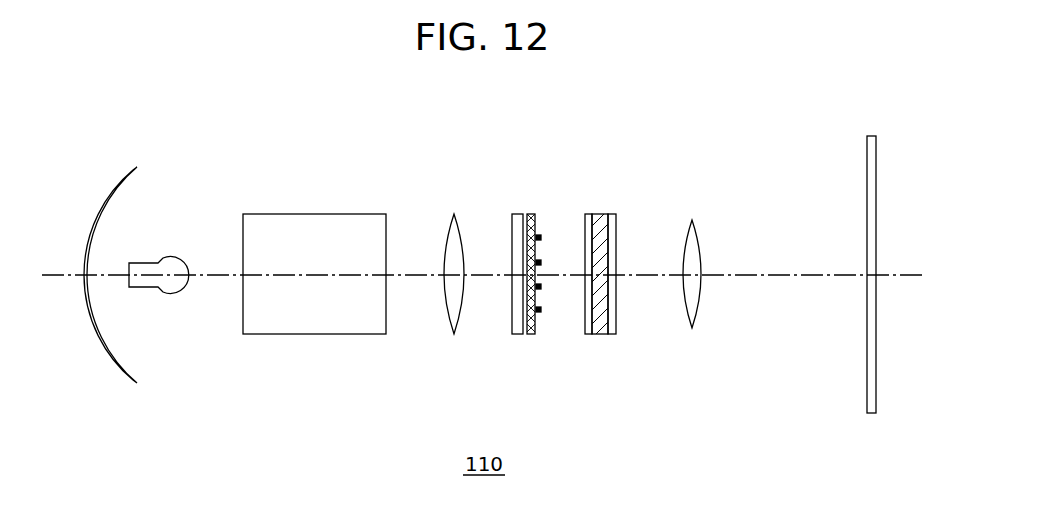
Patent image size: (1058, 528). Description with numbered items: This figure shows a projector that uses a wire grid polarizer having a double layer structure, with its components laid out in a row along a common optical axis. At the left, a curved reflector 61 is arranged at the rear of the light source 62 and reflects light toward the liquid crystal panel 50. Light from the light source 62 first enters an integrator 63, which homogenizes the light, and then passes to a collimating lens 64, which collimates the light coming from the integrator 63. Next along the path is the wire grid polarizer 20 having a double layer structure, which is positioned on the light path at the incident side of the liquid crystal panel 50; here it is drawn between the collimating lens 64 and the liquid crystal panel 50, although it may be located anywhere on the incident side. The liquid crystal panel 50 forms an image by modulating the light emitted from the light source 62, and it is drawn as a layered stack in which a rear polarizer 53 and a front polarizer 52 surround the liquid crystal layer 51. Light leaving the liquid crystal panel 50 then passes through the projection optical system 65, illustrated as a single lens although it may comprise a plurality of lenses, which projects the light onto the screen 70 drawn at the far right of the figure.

The reflector 61 is at (115, 357).
The light source 62 is at (173, 295).
The integrator 63 is at (315, 335).
The collimating lens 64 is at (454, 335).
The wire grid polarizer 20 is at (517, 335).
The liquid crystal panel 50 is at (600, 330).
The rear polarizer 53 is at (588, 335).
The liquid crystal layer 51 is at (599, 335).
The front polarizer 52 is at (629, 313).
The projection optical system 65 is at (692, 330).
The screen 70 is at (870, 414).